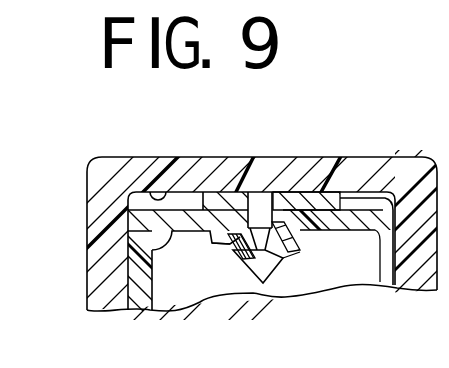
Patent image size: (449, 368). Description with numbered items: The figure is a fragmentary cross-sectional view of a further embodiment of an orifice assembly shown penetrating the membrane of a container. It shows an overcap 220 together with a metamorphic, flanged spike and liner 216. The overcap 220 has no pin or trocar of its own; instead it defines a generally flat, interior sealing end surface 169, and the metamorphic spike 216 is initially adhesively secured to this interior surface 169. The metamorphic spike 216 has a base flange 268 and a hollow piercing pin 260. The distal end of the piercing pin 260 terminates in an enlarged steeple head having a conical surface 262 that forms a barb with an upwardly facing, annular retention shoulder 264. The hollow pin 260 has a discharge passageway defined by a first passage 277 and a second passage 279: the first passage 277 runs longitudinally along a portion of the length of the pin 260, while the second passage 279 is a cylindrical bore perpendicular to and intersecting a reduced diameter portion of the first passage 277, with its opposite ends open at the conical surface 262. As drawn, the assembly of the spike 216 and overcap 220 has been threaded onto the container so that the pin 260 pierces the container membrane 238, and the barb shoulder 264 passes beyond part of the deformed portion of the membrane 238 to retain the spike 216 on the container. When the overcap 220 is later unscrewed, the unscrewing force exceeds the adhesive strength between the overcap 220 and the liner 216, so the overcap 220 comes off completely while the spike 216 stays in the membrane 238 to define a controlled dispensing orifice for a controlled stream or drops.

The overcap 220 is at (89, 171).
The interior sealing end surface 169 is at (150, 188).
The base flange 268 is at (247, 191).
The first passage 277 is at (273, 215).
The metamorphic flanged spike and liner 216 is at (348, 198).
The container membrane 238 is at (128, 257).
The hollow piercing pin 260 is at (238, 256).
The annular retention shoulder 264 is at (298, 233).
The second passage 279 is at (275, 262).
The conical surface 262 is at (268, 277).